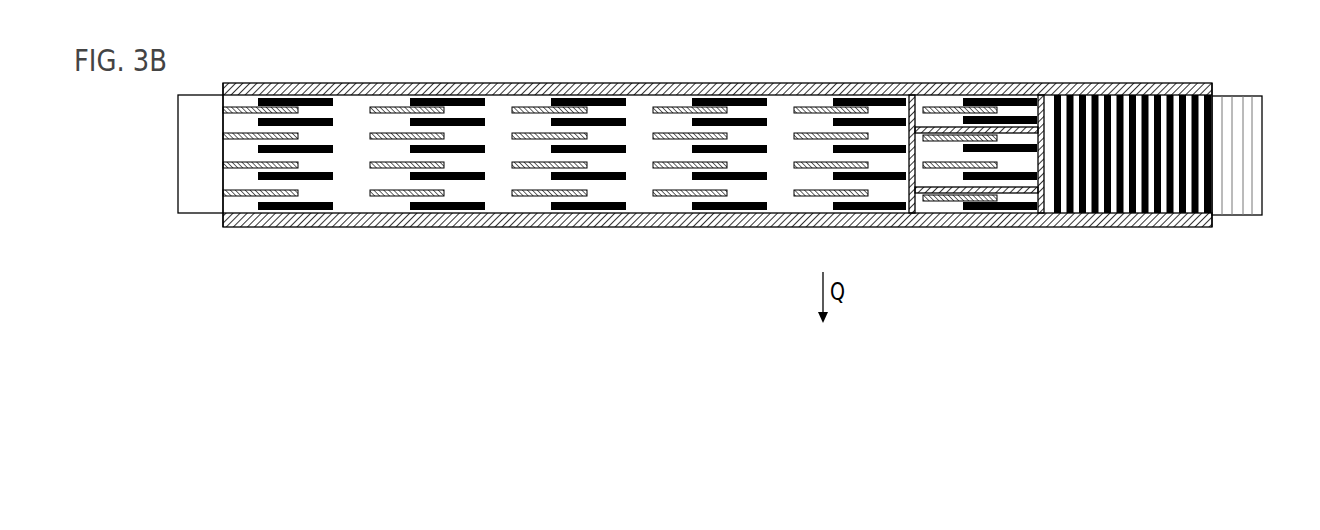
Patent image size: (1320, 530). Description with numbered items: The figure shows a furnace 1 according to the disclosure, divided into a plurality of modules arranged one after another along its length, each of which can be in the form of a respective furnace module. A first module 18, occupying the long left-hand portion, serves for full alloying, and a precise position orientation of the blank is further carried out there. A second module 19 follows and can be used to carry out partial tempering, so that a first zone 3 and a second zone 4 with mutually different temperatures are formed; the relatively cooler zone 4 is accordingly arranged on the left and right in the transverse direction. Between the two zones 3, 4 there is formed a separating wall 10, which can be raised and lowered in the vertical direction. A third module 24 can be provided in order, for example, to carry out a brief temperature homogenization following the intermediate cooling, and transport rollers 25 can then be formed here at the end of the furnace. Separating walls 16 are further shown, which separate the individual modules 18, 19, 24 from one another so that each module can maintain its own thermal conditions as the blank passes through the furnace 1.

The furnace 1 is at (1176, 53).
The first zone 3 is at (1024, 162).
The second zone 4 is at (1015, 108).
The separating wall 10 is at (942, 127).
The separating walls 16 is at (908, 138).
The first module 18 is at (575, 258).
The second module 19 is at (978, 191).
The third module 24 is at (1142, 258).
The transport rollers 25 is at (1197, 140).